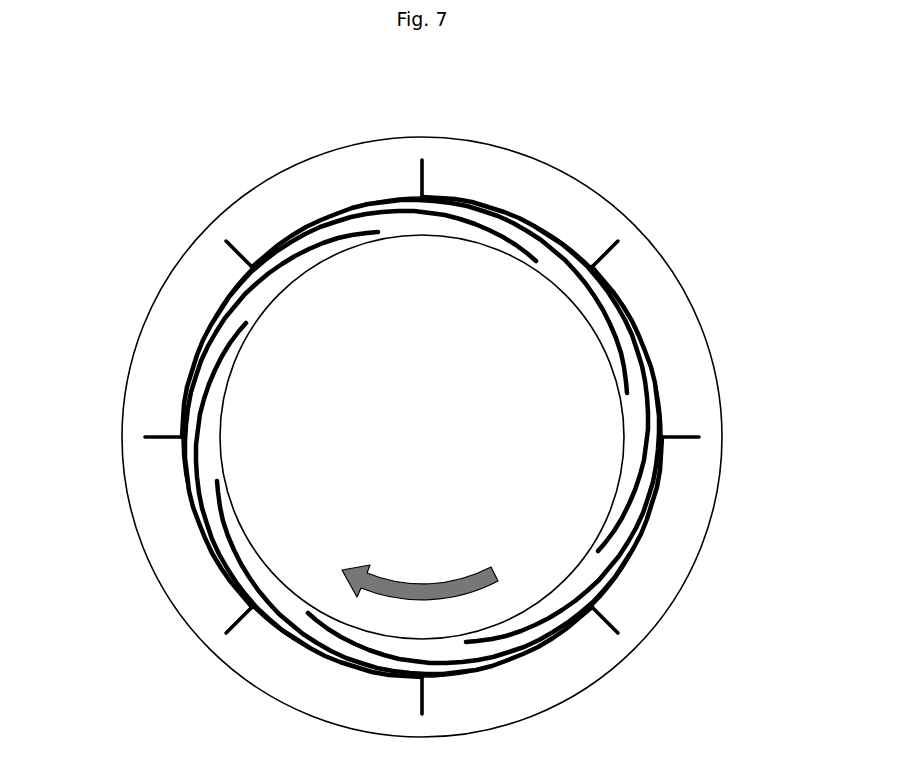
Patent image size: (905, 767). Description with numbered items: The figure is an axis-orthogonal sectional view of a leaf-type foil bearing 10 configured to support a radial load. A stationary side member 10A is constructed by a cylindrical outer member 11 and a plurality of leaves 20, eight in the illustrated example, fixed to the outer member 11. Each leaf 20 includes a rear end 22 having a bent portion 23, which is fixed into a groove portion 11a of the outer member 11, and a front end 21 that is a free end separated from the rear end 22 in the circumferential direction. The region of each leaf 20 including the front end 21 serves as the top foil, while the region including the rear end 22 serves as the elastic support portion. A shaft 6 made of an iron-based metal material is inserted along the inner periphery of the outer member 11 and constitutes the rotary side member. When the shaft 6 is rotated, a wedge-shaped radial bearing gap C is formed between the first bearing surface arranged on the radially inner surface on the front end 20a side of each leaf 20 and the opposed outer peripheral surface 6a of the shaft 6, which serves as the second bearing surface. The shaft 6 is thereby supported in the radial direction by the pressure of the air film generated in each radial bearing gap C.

The foil bearing 10 is at (670, 201).
The stationary side member 10A is at (160, 247).
The outer member 11 is at (690, 527).
The groove portion 11a is at (699, 436).
The leaf 20 is at (613, 574).
The front end side of leaf 20a is at (341, 245).
The front end 21 is at (335, 222).
The rear end 22 is at (203, 337).
The bent portion 23 is at (181, 432).
The shaft 6 is at (571, 370).
The outer peripheral surface 6a is at (221, 455).
The radial bearing gap C is at (313, 257).